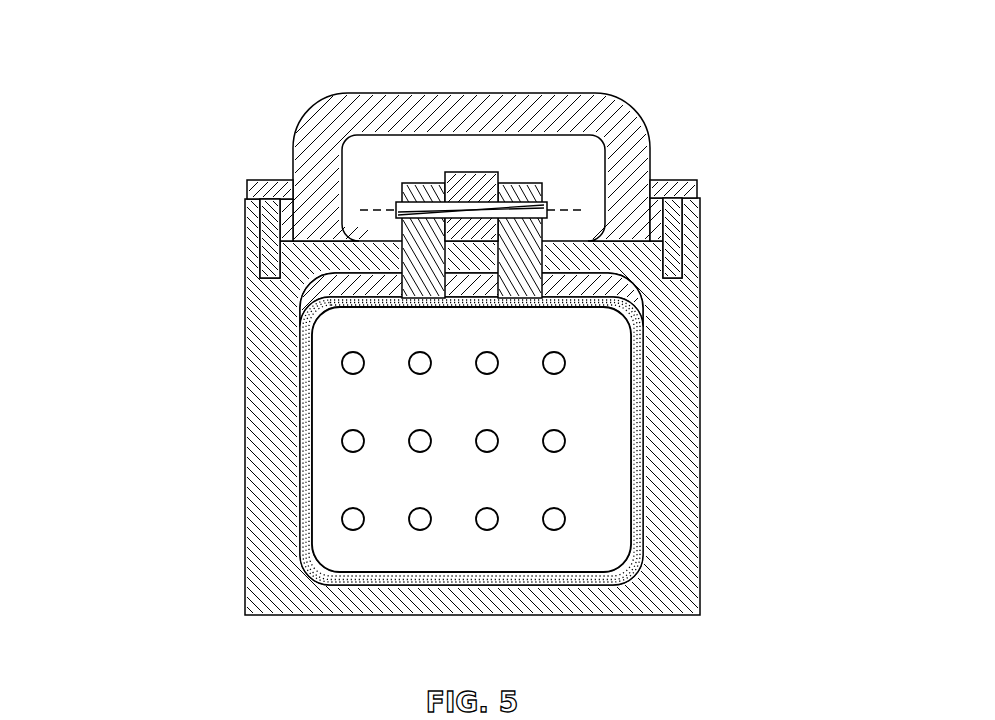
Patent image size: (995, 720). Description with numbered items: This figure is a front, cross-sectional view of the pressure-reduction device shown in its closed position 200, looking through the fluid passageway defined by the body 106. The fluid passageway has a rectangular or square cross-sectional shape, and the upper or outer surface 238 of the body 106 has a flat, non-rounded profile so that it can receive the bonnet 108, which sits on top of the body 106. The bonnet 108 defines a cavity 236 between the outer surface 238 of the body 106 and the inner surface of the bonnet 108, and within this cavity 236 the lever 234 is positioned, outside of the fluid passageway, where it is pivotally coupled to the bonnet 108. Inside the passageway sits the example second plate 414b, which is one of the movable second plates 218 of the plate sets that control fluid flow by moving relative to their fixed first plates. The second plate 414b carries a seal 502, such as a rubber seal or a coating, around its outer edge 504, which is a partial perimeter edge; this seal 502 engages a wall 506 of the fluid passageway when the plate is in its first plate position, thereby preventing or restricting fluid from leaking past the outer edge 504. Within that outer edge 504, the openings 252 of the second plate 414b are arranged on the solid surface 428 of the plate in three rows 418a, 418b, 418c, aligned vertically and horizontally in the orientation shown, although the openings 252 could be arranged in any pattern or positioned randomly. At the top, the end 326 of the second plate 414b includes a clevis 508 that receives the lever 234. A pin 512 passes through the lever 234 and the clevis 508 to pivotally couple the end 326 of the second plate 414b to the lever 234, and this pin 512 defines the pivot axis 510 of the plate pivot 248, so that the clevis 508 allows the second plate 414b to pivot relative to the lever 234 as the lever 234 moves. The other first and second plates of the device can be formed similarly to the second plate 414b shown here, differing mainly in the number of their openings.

The closed position 200 is at (170, 30).
The body 106 is at (243, 465).
The bonnet 108 is at (346, 94).
The second plate 218 is at (643, 332).
The lever 234 is at (473, 171).
The cavity 236 is at (396, 174).
The outer surface 238 is at (442, 183).
The plate pivot 248 is at (550, 213).
The openings 252 is at (408, 338).
The end 326 is at (420, 262).
The second plate 414b is at (338, 390).
The row 418a is at (578, 364).
The row 418b is at (578, 442).
The row 418c is at (578, 520).
The solid surface 428 is at (347, 547).
The seal 502 is at (487, 597).
The outer edge 504 is at (298, 437).
The wall 506 is at (598, 598).
The clevis 508 is at (417, 183).
The pivot axis 510 is at (558, 207).
The pin 512 is at (478, 205).